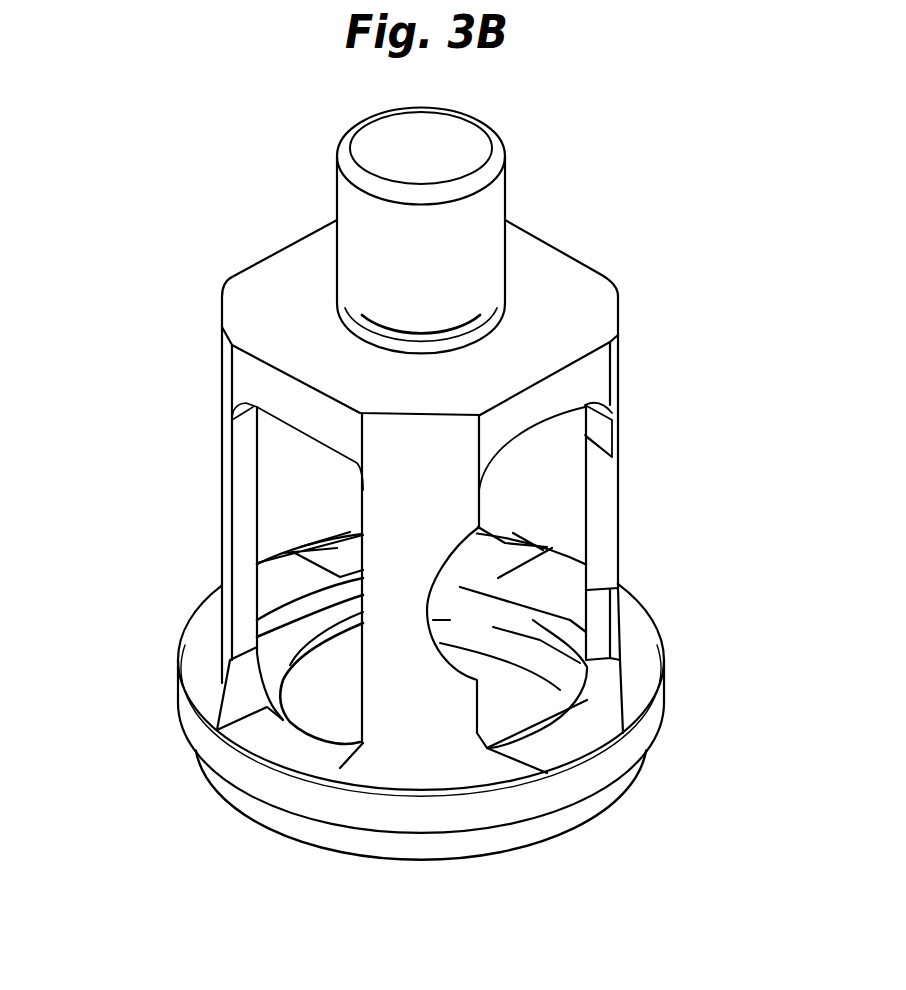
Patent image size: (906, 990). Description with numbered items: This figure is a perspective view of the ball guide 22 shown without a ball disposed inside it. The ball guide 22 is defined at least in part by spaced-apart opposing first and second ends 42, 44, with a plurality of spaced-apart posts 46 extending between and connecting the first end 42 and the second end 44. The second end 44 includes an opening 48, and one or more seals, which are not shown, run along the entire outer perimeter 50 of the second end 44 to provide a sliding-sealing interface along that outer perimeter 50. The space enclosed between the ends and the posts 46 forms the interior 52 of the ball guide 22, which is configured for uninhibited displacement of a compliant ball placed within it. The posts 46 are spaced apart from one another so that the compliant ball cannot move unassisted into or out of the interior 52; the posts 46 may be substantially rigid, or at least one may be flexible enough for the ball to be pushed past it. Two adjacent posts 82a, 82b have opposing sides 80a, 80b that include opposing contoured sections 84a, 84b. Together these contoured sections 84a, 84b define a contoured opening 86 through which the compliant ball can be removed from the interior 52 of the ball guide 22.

The ball guide 22 is at (617, 174).
The first end 42 is at (577, 293).
The second end 44 is at (682, 692).
The posts 46 is at (387, 485).
The opening 48 is at (315, 713).
The outer perimeter 50 is at (183, 724).
The interior 52 is at (538, 480).
The opposing side 80a is at (480, 692).
The opposing side 80b is at (600, 627).
The adjacent post 82a is at (397, 588).
The adjacent post 82b is at (620, 535).
The contoured section 84a is at (440, 632).
The contoured section 84b is at (600, 485).
The contoured opening 86 is at (437, 675).